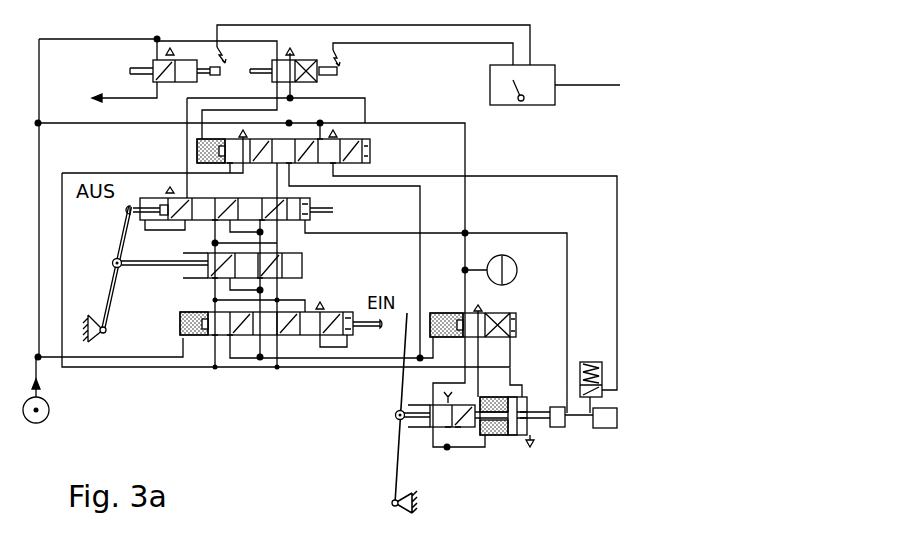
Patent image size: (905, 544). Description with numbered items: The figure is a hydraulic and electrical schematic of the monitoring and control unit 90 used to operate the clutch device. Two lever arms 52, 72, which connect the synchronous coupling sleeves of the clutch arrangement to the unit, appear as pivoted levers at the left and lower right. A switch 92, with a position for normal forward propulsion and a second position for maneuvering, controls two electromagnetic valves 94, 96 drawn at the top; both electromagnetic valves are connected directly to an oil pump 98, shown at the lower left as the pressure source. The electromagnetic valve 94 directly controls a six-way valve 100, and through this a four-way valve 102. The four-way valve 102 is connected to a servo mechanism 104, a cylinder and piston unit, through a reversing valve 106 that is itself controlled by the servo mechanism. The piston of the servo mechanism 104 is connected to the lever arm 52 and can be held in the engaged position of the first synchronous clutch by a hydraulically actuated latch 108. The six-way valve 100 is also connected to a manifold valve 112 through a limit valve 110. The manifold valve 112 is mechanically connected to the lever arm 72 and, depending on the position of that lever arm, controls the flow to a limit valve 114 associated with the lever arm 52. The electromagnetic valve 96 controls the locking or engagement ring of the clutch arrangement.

The lever arm 52 is at (400, 462).
The lever arm 72 is at (110, 297).
The monitoring and control unit 90 is at (278, 408).
The switch 92 is at (547, 98).
The electromagnetic valve 94 is at (330, 85).
The electromagnetic valve 96 is at (130, 57).
The oil pump 98 is at (47, 405).
The 6-way valve 100 is at (380, 151).
The 4-way valve 102 is at (524, 318).
The servo mechanism 104 is at (512, 450).
The reversing valve 106 is at (457, 459).
The hydraulically actuated latch 108 is at (617, 399).
The limit valve 110 is at (338, 205).
The manifold valve 112 is at (317, 262).
The limit valve 114 is at (334, 290).